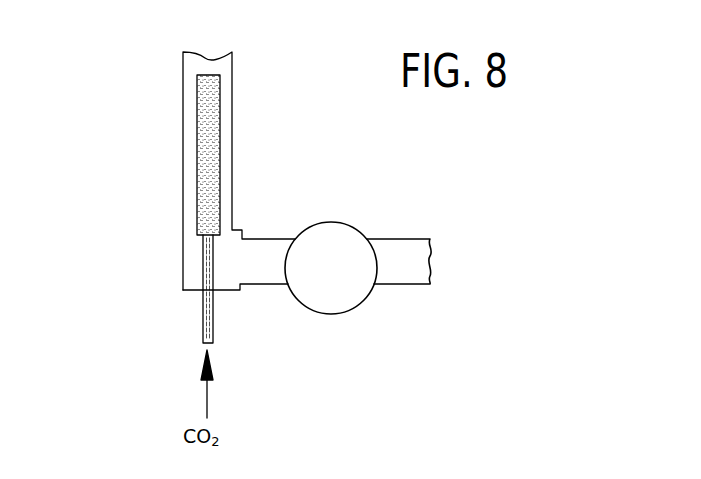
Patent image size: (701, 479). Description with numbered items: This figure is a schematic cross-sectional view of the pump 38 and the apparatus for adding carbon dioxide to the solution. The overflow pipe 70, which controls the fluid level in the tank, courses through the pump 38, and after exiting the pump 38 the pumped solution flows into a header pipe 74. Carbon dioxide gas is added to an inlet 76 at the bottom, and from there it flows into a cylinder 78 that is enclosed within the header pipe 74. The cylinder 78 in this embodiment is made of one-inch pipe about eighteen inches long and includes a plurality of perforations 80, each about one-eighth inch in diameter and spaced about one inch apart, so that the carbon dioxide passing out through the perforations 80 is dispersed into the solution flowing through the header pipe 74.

The pump 38 is at (331, 268).
The overflow pipe 70 is at (403, 239).
The header pipe 74 is at (232, 79).
The inlet 76 is at (206, 303).
The cylinder 78 is at (232, 157).
The perforations 80 is at (207, 172).